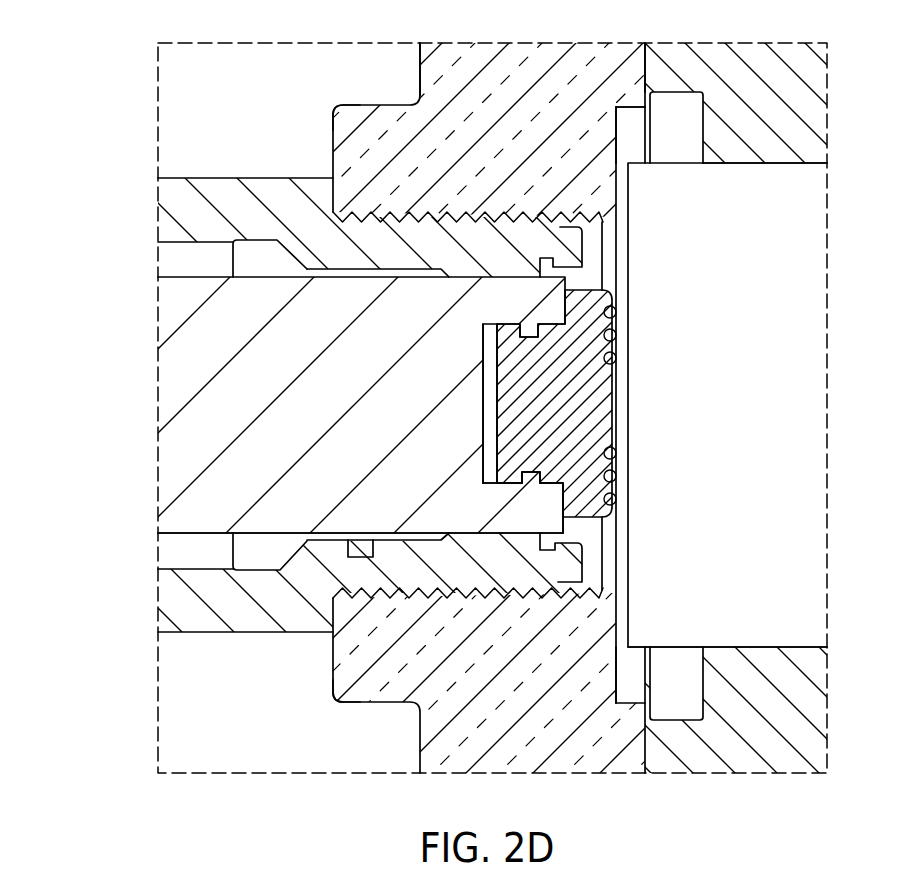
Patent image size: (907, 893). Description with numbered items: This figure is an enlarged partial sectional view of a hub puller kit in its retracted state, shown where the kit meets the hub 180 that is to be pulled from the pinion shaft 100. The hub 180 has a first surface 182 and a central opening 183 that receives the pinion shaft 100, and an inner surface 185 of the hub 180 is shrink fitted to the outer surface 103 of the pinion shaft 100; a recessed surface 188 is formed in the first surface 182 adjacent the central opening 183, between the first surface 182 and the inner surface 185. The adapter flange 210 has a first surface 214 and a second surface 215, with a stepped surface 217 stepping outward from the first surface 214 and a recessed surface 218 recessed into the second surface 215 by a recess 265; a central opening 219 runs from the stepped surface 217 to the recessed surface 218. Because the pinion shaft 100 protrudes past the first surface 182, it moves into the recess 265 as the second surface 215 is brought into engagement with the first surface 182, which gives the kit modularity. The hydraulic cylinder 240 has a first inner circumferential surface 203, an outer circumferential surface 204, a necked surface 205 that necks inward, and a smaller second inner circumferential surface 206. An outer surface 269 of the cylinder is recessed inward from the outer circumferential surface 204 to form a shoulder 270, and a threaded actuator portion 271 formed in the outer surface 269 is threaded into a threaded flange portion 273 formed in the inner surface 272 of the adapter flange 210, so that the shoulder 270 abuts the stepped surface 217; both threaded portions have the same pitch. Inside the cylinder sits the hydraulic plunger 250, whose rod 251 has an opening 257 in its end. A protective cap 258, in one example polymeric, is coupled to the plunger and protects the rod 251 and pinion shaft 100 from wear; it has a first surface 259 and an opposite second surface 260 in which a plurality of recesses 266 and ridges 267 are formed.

The pinion shaft 100 is at (803, 243).
The outer surface of the pinion shaft 103 is at (753, 645).
The hub 180 is at (803, 62).
The first surface of the hub 182 is at (672, 62).
The central opening of the hub 183 is at (771, 163).
The inner surface of the hub 185 is at (800, 648).
The recessed surface of the hub 188 is at (705, 110).
The first inner circumferential surface 203 is at (195, 250).
The outer circumferential surface 204 is at (210, 634).
The necked surface 205 is at (290, 257).
The second inner circumferential surface 206 is at (407, 268).
The adapter flange 210 is at (370, 120).
The first surface of the adapter flange 214 is at (420, 50).
The second surface of the adapter flange 215 is at (644, 60).
The stepped surface 217 is at (330, 125).
The recessed surface of the adapter flange 218 is at (623, 130).
The central opening of the adapter flange 219 is at (593, 578).
The hydraulic cylinder 240 is at (226, 600).
The hydraulic plunger 250 is at (193, 378).
The rod 251 is at (190, 499).
The opening 257 is at (508, 487).
The cap 258 is at (525, 382).
The first surface of the cap 259 is at (500, 423).
The second surface of the cap 260 is at (613, 413).
The recess 265 is at (633, 121).
The recesses 266 is at (616, 313).
The ridges 267 is at (615, 324).
The outer surface of the hydraulic cylinder 269 is at (447, 587).
The shoulder 270 is at (330, 610).
The threaded actuator portion 271 is at (484, 221).
The inner surface of the adapter flange 272 is at (477, 594).
The threaded flange portion 273 is at (474, 215).